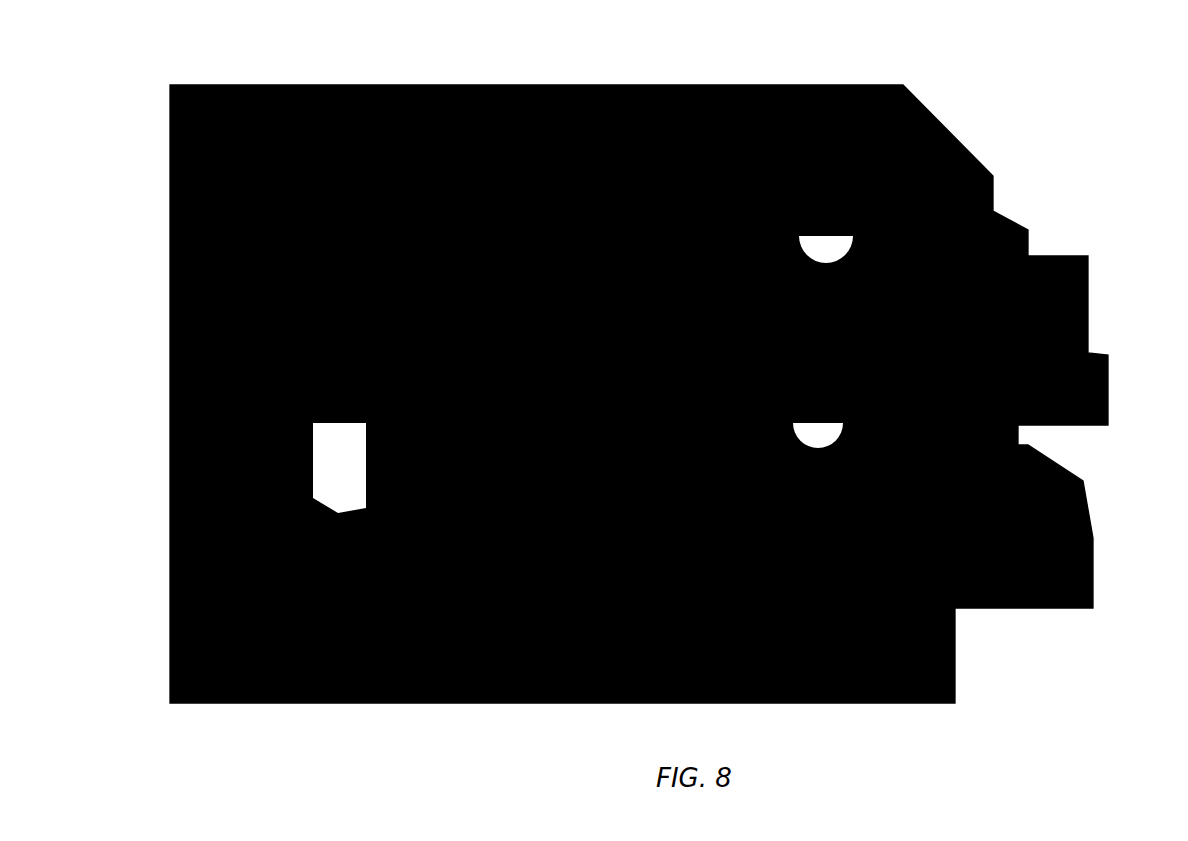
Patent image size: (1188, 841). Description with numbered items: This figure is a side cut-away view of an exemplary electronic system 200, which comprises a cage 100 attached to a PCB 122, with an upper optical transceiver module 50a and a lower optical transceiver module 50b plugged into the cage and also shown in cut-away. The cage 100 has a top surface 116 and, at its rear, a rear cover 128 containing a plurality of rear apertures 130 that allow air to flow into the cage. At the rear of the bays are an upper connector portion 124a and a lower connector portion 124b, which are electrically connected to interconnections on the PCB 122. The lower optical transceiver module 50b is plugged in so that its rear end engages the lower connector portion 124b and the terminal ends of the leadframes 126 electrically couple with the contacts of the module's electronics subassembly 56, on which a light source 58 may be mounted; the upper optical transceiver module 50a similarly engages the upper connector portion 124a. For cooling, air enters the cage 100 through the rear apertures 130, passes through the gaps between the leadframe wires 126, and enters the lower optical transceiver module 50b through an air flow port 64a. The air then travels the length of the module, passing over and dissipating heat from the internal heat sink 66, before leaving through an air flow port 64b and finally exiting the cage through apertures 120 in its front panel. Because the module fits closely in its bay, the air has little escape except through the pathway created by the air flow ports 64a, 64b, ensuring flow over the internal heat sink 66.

The cage 100 is at (877, 48).
The electronic system 200 is at (1112, 75).
The top surface 116 is at (537, 118).
The rear apertures 130 is at (190, 273).
The rear cover 128 is at (178, 415).
The upper connector portion 124a is at (318, 392).
The leadframes 126 is at (325, 462).
The lower connector portion 124b is at (403, 548).
The PCB 122 is at (300, 636).
The air flow port 64a is at (520, 488).
The electronics subassembly 56 is at (633, 548).
The internal heat sink 66 is at (768, 522).
The light source 58 is at (820, 535).
The air flow port 64b is at (850, 490).
The upper optical transceiver module 50a is at (1040, 338).
The apertures 120 is at (985, 429).
The lower optical transceiver module 50b is at (1040, 528).